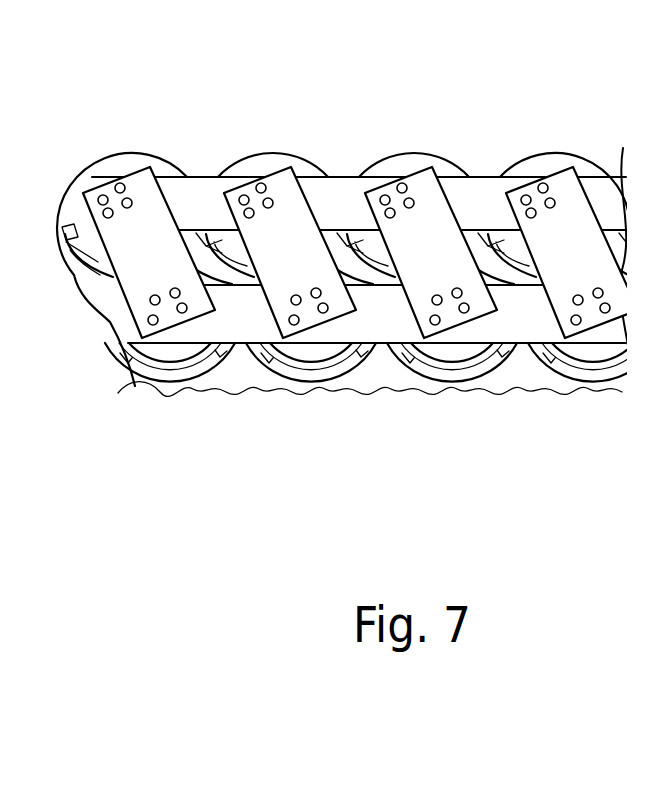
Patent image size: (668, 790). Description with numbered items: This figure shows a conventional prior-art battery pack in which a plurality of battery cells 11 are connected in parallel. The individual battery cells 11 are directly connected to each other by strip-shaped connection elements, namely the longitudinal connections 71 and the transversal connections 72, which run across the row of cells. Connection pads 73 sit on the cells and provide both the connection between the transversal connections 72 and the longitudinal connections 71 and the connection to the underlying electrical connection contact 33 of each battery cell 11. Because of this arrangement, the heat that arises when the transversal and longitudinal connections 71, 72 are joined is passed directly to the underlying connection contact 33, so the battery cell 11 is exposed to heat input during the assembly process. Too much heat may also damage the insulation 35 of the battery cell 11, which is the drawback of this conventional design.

The battery cell 11 is at (560, 150).
The longitudinal connection 71 is at (348, 190).
The transversal connection 72 is at (277, 183).
The connection pad 73 is at (310, 313).
The electrical connection contact 33 is at (172, 355).
The insulation 35 is at (120, 318).